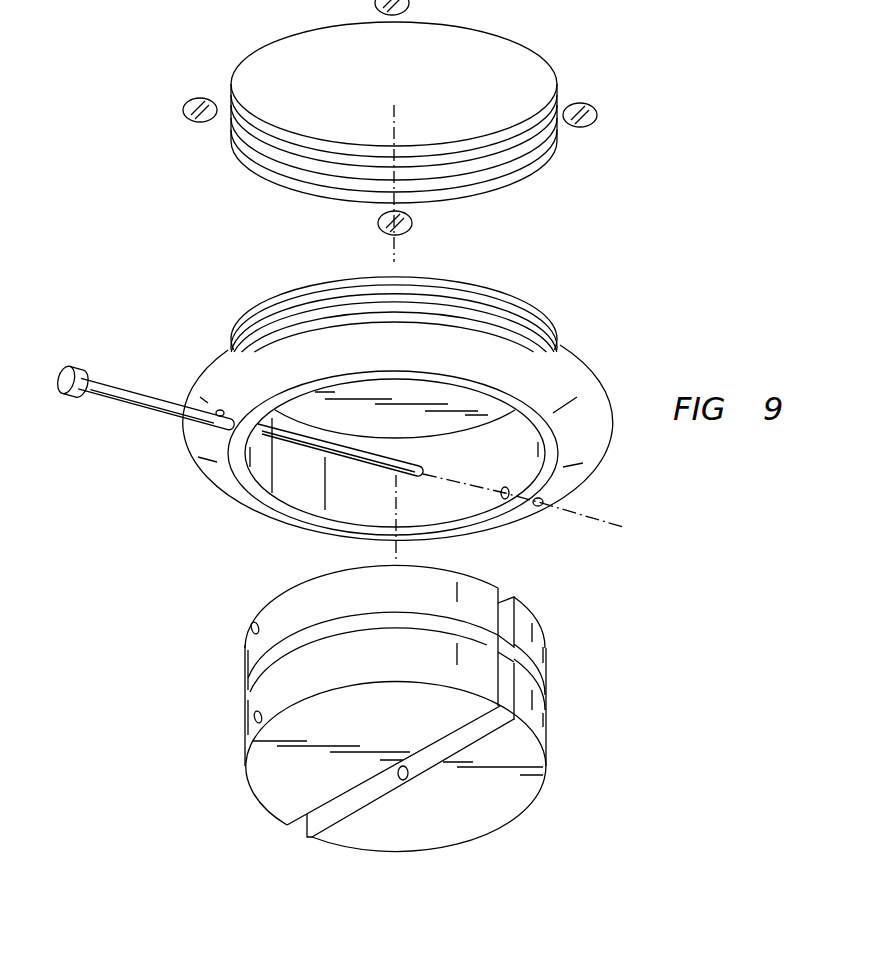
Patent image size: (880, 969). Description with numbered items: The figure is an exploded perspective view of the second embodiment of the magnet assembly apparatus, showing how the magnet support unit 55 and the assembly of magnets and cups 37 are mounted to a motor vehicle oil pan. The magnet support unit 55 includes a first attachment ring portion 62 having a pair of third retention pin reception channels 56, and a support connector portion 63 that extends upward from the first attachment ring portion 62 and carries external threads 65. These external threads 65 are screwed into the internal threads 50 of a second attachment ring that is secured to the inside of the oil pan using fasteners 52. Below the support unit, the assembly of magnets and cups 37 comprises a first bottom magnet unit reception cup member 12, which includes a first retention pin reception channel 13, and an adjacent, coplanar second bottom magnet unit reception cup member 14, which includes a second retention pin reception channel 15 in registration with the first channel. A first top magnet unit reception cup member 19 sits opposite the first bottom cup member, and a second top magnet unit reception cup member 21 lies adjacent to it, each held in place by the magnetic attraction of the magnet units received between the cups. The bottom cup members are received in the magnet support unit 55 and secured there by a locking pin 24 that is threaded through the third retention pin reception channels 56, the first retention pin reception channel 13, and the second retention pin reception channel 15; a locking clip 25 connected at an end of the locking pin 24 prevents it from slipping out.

The first bottom magnet unit reception cup member 12 is at (285, 765).
The first retention pin reception channel 13 is at (258, 712).
The second bottom magnet unit reception cup member 14 is at (518, 745).
The second retention pin reception channel 15 is at (408, 770).
The first top magnet unit reception cup member 19 is at (300, 589).
The second top magnet unit reception cup member 21 is at (550, 633).
The locking pin 24 is at (134, 387).
The locking clip 25 is at (638, 538).
The assembly of magnets and cups 37 is at (216, 631).
The internal threads 50 is at (272, 152).
The fasteners 52 is at (190, 118).
The magnet support unit 55 is at (598, 371).
The third retention pin reception channels 56 is at (224, 412).
The first attachment ring portion 62 is at (586, 432).
The support connector portion 63 is at (560, 320).
The external threads 65 is at (480, 287).